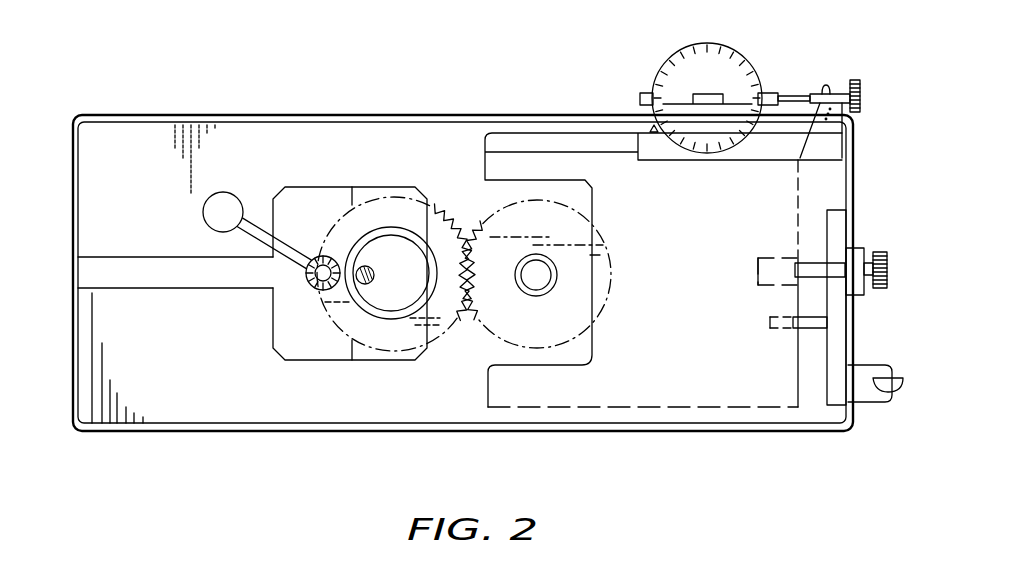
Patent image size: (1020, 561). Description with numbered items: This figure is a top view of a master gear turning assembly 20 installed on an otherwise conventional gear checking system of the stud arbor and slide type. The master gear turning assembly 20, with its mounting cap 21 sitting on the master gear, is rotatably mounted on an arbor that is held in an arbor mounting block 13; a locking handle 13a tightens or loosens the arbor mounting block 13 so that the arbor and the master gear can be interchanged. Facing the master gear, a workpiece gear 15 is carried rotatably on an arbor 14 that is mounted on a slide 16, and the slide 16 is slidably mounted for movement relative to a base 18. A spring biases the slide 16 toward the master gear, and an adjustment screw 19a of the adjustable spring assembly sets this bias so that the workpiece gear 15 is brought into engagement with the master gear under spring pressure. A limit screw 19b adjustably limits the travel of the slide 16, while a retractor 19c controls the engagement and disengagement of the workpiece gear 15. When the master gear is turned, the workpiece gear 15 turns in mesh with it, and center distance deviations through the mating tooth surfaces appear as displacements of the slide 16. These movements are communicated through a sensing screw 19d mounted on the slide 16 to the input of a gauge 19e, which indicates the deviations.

The arbor mounting block 13 is at (273, 336).
The locking handle 13a is at (204, 215).
The arbor 14 is at (538, 282).
The workpiece gear 15 is at (557, 212).
The slide 16 is at (693, 263).
The base 18 is at (241, 112).
The adjustment screw 19a is at (880, 250).
The limit screw 19b is at (862, 312).
The retractor 19c is at (871, 405).
The sensing screw 19d is at (877, 66).
The gauge 19e is at (738, 48).
The master gear turning assembly 20 is at (375, 218).
The mounting cap 21 is at (357, 303).